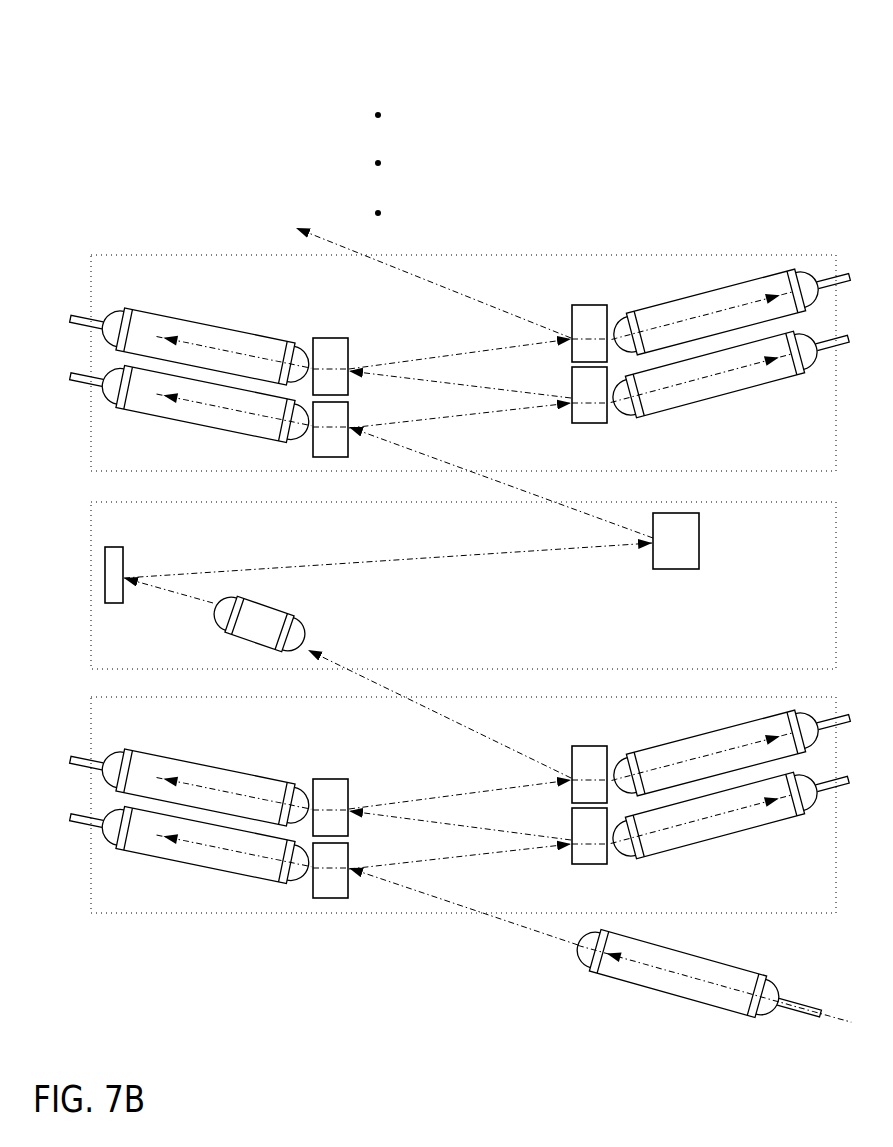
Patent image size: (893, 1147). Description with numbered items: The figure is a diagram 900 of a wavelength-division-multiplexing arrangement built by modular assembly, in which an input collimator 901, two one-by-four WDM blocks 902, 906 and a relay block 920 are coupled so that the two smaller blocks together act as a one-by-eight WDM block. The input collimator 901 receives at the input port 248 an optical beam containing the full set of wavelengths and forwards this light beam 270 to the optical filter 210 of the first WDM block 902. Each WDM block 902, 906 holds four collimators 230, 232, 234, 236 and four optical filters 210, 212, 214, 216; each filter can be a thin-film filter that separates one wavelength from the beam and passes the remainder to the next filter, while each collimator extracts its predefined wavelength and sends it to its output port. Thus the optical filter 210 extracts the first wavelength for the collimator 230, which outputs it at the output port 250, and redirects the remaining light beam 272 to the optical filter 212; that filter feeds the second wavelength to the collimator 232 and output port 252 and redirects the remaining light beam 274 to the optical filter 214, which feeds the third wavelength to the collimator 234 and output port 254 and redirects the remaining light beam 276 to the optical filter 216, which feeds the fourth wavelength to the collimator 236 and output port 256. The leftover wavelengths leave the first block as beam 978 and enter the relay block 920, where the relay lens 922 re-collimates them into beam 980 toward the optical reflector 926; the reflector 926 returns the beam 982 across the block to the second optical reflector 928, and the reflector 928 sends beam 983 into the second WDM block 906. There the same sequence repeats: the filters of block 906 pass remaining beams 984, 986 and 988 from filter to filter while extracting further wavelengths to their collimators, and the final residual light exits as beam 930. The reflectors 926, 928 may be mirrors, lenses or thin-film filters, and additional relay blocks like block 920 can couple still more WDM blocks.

The diagram 900 is at (703, 36).
The input collimator 901 is at (719, 961).
The 1×4 WDM block 902 is at (814, 902).
The 1×4 WDM block 906 is at (814, 461).
The relay block 920 is at (814, 659).
The relay lens 922 is at (259, 624).
The optical reflector 926 is at (104, 567).
The optical reflector 928 is at (690, 550).
The output beam 930 is at (415, 277).
The optical filter 210 is at (345, 454).
The optical filter 212 is at (604, 386).
The optical filter 214 is at (345, 357).
The optical filter 216 is at (604, 324).
The collimator 230 is at (217, 428).
The collimator 232 is at (696, 403).
The collimator 234 is at (207, 324).
The collimator 236 is at (718, 289).
The input port 248 is at (792, 1001).
The output port 250 is at (72, 382).
The output port 252 is at (846, 344).
The output port 254 is at (73, 315).
The output port 256 is at (849, 273).
The light beam 270 is at (491, 916).
The remaining light beam 272 is at (494, 853).
The remaining light beam 274 is at (412, 819).
The remaining light beam 276 is at (519, 787).
The beam from fourth filter to relay lens 978 is at (367, 678).
The beam from relay lens to mirror 980 is at (190, 597).
The beam between mirrors 982 is at (441, 558).
The beam from mirror to second module 983 is at (483, 476).
The beam from first filter to second filter in second module 984 is at (494, 412).
The beam from second filter to third filter in second module 986 is at (411, 378).
The beam from third filter to fourth filter in second module 988 is at (519, 346).